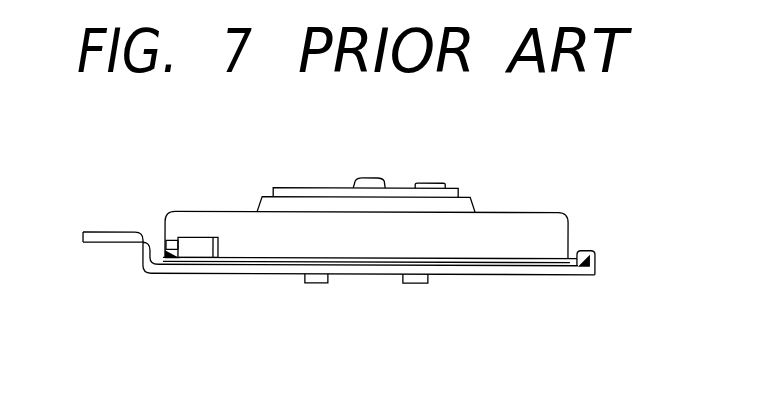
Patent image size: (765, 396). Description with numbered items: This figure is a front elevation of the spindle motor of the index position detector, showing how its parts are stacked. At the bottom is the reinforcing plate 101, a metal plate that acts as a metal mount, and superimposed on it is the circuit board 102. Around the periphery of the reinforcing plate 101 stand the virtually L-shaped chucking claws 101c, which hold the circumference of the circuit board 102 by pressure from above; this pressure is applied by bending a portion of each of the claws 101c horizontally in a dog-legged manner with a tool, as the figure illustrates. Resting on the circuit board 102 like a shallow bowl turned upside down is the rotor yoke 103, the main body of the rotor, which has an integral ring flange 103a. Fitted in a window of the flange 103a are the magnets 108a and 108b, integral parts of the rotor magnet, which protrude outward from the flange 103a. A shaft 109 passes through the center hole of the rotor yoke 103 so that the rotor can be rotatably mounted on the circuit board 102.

The reinforcing plate 101 is at (370, 268).
The chucking claws 101c is at (167, 243).
The circuit board 102 is at (495, 264).
The rotor yoke 103 is at (518, 212).
The ring flange 103a is at (571, 232).
The magnet 108a is at (198, 238).
The magnet 108b is at (178, 238).
The shaft 109 is at (365, 178).